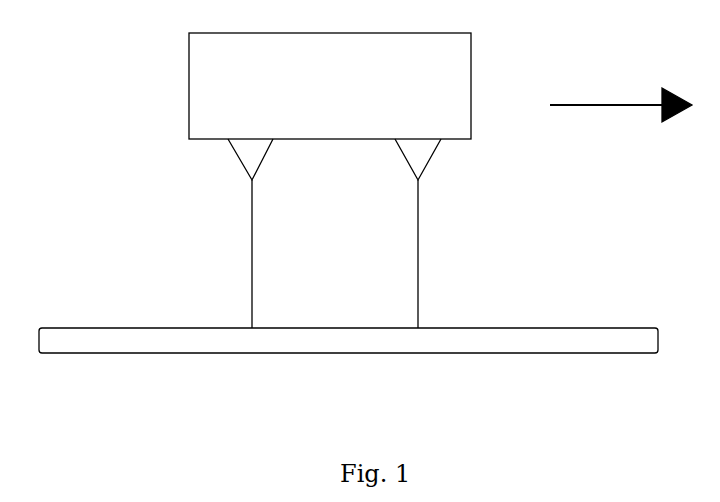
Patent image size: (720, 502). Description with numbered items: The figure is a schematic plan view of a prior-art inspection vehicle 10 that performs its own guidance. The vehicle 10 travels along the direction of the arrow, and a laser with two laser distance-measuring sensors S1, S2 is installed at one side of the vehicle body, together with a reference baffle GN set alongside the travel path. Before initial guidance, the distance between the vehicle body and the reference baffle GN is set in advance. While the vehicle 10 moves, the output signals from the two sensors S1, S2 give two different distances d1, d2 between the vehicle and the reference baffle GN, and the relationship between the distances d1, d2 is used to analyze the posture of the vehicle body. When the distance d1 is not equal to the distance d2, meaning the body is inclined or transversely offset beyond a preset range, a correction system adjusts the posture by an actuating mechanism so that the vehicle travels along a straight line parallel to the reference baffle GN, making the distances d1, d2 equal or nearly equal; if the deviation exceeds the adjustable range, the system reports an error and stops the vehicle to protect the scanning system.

The vehicle 10 is at (330, 86).
The laser distance-measuring sensor S1 is at (254, 159).
The laser distance-measuring sensor S2 is at (421, 159).
The distance d1 is at (243, 254).
The distance d2 is at (408, 254).
The reference baffle GN is at (595, 328).